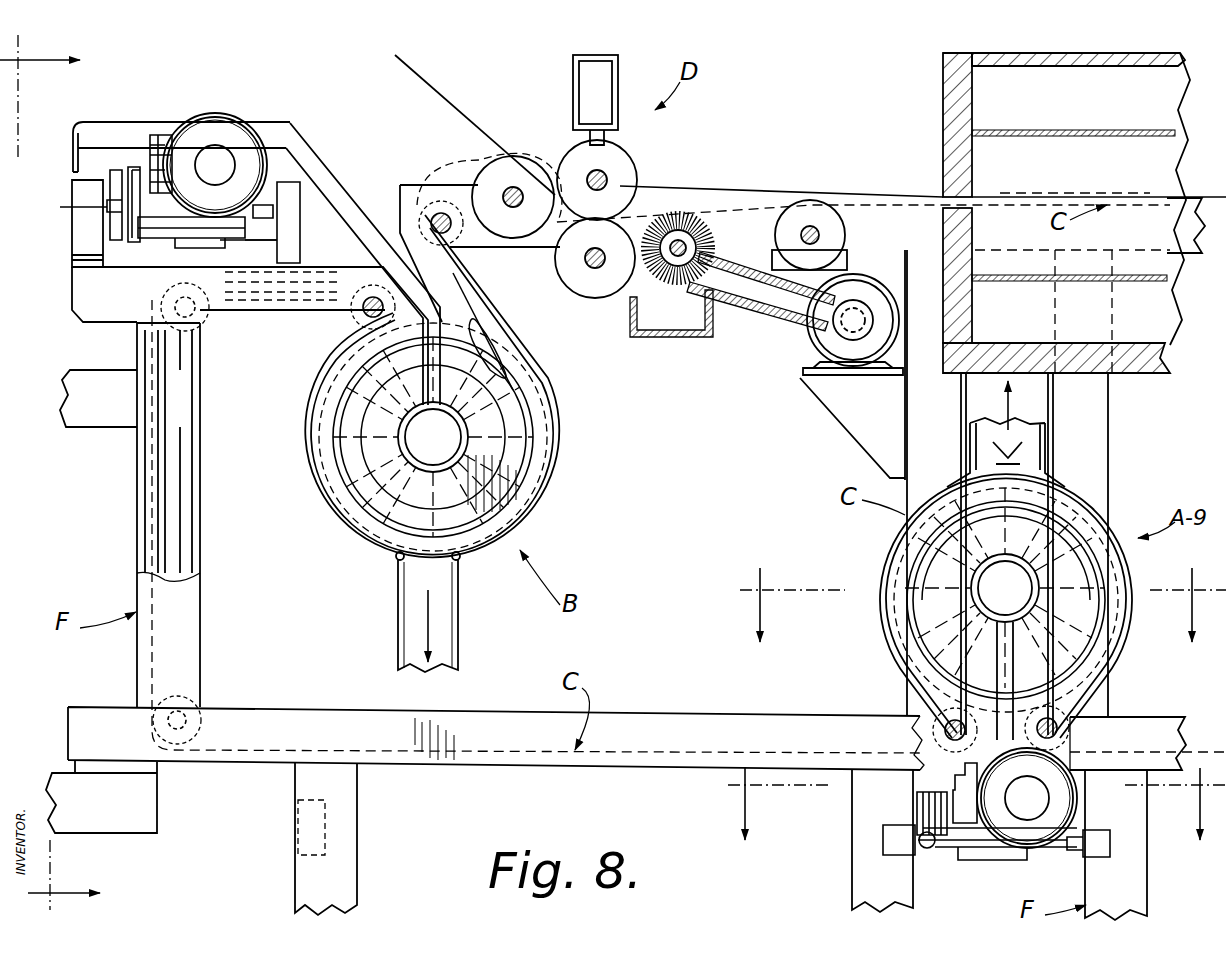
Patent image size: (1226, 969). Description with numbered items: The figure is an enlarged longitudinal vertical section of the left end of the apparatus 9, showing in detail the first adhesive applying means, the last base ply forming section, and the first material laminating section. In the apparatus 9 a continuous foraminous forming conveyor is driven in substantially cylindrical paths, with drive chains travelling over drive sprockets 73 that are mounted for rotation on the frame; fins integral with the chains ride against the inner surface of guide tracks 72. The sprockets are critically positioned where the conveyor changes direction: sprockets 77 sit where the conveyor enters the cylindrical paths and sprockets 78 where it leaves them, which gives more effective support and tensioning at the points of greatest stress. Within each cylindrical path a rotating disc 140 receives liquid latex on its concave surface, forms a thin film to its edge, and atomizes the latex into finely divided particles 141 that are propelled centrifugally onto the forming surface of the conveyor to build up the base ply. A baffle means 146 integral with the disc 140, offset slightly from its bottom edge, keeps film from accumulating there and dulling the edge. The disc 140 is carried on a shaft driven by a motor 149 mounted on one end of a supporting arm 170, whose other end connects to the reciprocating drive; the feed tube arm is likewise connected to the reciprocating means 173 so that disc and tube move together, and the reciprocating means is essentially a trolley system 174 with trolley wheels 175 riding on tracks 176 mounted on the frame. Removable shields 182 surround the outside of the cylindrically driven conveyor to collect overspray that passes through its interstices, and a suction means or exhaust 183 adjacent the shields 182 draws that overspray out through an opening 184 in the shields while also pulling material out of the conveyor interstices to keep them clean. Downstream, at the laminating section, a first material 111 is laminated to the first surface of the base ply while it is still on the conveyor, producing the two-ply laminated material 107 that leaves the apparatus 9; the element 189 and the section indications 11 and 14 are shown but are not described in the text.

The apparatus 9 is at (50, 481).
The section line 11- 11 is at (976, 815).
The section line 14- 14 is at (972, 604).
The guide tracks 72 is at (160, 492).
The drive sprockets 73 is at (470, 255).
The sprockets 77 is at (1100, 740).
The sprockets 78 is at (905, 737).
The two-ply laminated material 107 is at (878, 194).
The first material 111 is at (460, 90).
The rotating disc 140 is at (480, 505).
The elastomeric material particles 141 is at (355, 505).
The baffle means 146 is at (400, 440).
The motor 149 is at (718, 512).
The supporting arm 170 is at (307, 158).
The reciprocating means 173 is at (222, 130).
The trolley system 174 is at (175, 232).
The trolley wheels 175 is at (113, 188).
The tracks 176 is at (107, 207).
The removable shields 182 is at (332, 462).
The suction means or exhaust 183 is at (398, 628).
The opening 184 is at (1032, 448).
The hatched housing 189 is at (957, 80).